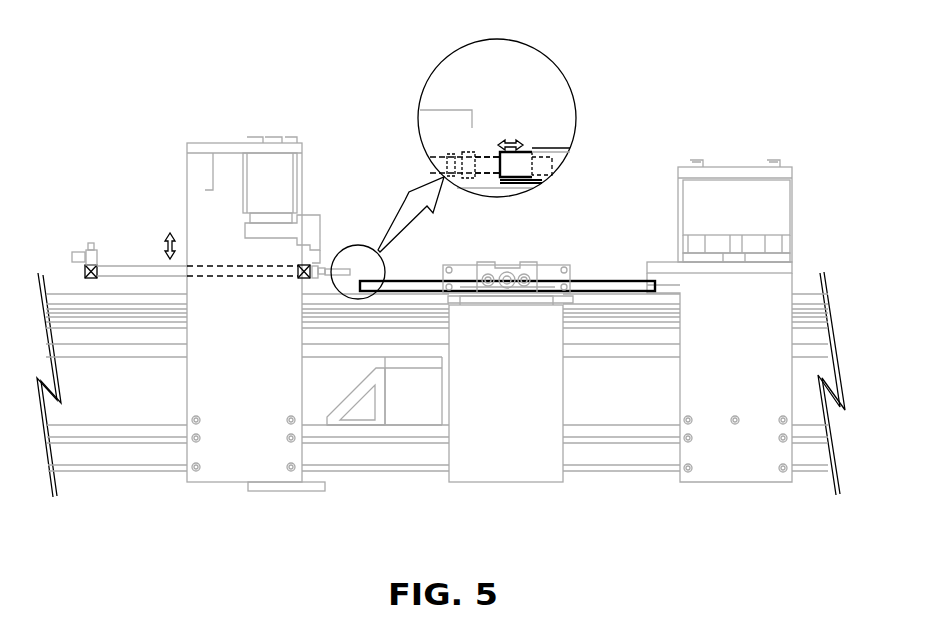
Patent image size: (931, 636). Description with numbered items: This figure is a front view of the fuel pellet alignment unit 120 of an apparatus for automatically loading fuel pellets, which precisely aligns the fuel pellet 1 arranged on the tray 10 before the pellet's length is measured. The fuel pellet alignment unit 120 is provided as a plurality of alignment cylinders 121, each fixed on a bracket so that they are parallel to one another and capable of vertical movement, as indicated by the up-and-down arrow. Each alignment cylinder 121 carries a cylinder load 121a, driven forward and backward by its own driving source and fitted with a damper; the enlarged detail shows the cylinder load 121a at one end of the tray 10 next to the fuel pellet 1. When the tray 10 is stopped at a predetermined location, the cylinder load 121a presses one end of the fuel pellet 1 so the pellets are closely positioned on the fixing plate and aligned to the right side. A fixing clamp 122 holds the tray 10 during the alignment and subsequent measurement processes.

The alignment cylinder 121 is at (155, 270).
The fuel pellet alignment unit 120 is at (331, 240).
The cylinder load 121a is at (488, 153).
The fuel pellet 1 is at (558, 148).
The tray 10 is at (530, 183).
The fixing clamp 122 is at (503, 263).